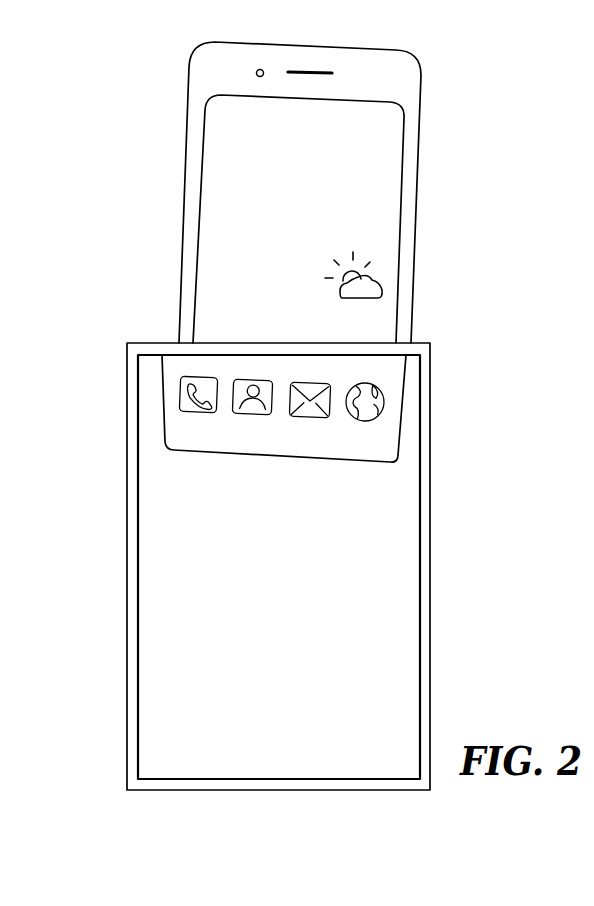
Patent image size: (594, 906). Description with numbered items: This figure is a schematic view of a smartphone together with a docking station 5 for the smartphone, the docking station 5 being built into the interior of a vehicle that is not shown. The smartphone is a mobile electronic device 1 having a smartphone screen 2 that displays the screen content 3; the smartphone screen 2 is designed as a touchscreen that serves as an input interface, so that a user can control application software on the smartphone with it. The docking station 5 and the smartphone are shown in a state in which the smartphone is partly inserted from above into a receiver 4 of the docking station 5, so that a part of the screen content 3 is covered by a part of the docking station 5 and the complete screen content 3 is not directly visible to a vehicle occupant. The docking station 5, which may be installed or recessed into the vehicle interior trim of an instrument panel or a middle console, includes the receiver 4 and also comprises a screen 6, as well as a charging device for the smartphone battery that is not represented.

The mobile electronic device 1 is at (420, 177).
The smartphone screen 2 is at (400, 235).
The screen content 3 is at (387, 167).
The receiver 4 is at (163, 343).
The docking station 5 is at (430, 588).
The screen 6 is at (419, 497).